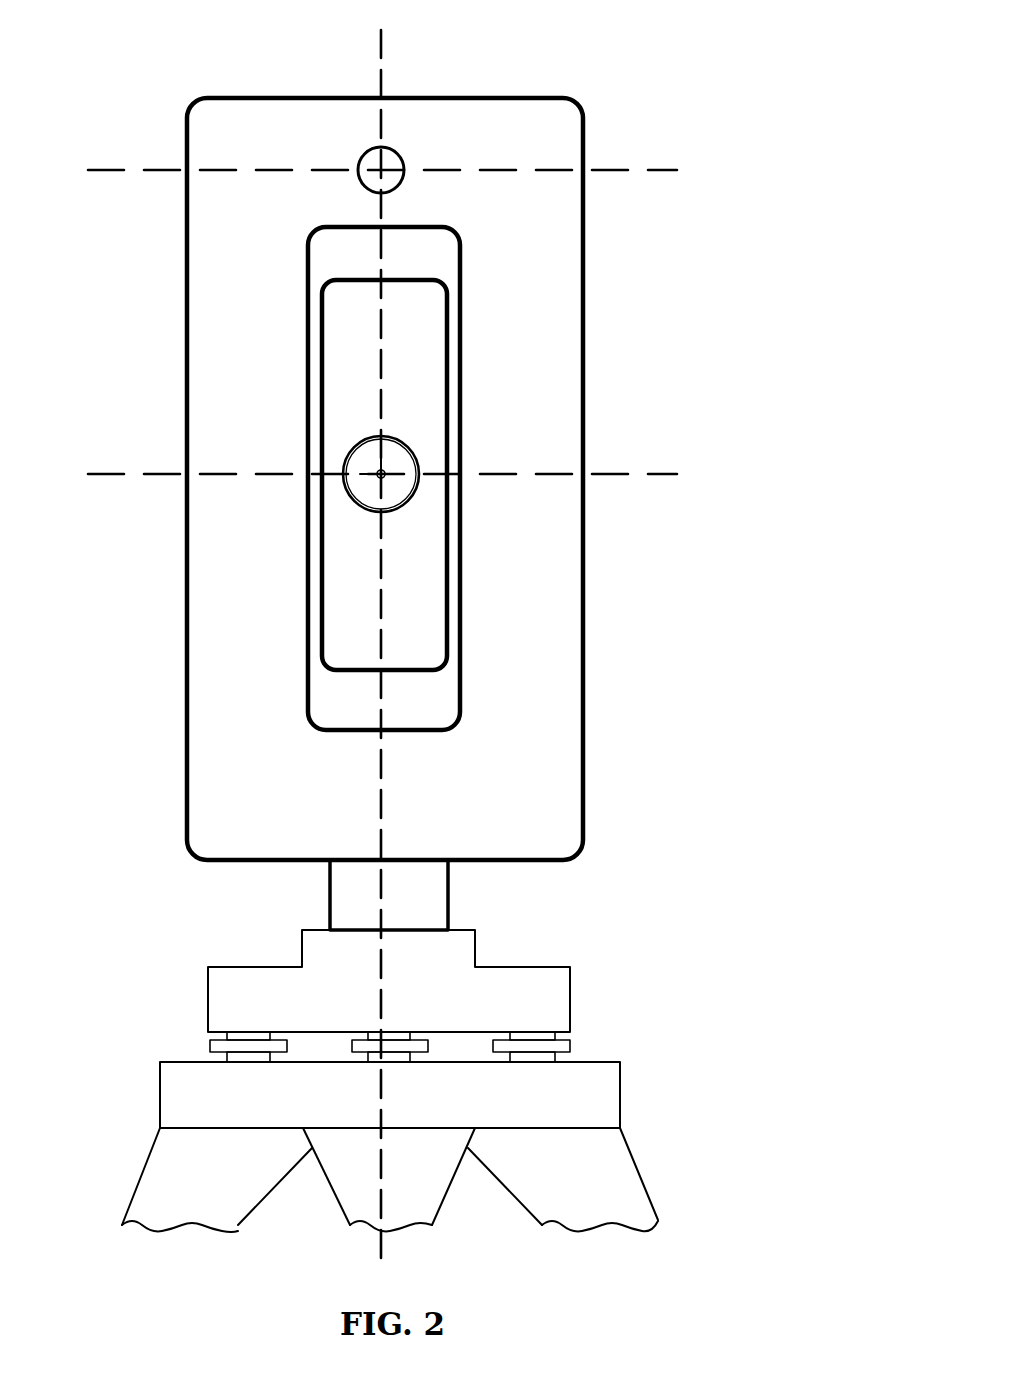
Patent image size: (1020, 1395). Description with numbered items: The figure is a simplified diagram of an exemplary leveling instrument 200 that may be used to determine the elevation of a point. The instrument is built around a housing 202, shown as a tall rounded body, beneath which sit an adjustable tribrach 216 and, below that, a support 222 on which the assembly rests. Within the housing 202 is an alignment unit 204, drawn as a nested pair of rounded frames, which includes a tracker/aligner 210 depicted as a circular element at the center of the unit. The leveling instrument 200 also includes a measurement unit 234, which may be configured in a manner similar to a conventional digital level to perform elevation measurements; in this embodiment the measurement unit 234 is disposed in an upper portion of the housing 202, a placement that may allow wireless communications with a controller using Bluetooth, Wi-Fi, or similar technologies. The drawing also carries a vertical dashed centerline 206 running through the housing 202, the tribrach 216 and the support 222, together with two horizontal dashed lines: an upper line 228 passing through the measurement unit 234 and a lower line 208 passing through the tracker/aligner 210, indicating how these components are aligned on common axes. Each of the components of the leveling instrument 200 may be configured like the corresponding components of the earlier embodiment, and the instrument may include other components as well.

The leveling instrument 200 is at (150, 63).
The housing 202 is at (583, 645).
The alignment unit 204 is at (373, 334).
The vertical axis 206 is at (381, 57).
The horizontal axis 208 is at (617, 474).
The tracker/aligner 210 is at (385, 437).
The adjustable tribrach 216 is at (570, 977).
The support 222 is at (620, 1080).
The upper horizontal axis 228 is at (617, 170).
The measurement unit 234 is at (360, 165).